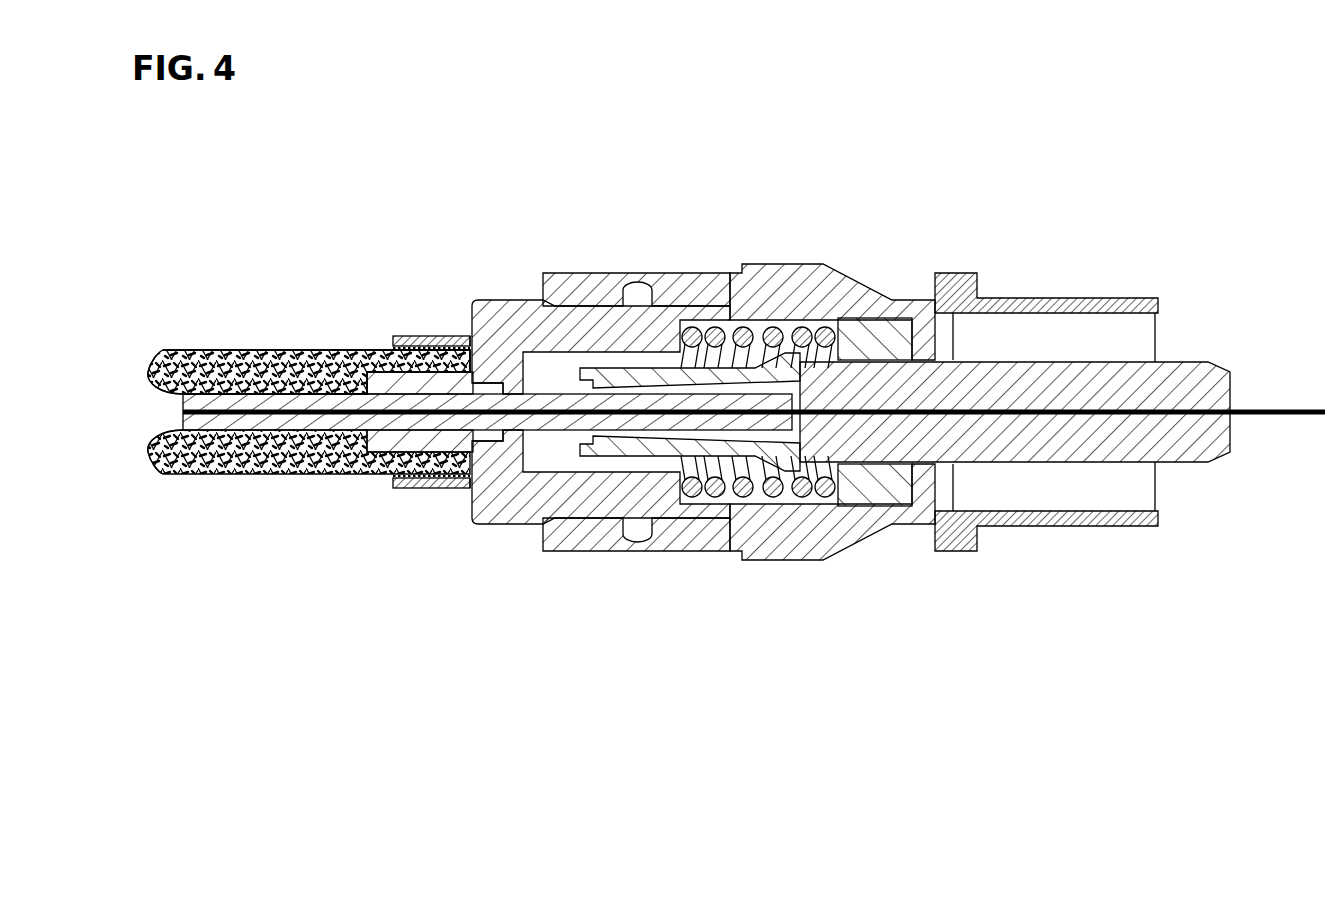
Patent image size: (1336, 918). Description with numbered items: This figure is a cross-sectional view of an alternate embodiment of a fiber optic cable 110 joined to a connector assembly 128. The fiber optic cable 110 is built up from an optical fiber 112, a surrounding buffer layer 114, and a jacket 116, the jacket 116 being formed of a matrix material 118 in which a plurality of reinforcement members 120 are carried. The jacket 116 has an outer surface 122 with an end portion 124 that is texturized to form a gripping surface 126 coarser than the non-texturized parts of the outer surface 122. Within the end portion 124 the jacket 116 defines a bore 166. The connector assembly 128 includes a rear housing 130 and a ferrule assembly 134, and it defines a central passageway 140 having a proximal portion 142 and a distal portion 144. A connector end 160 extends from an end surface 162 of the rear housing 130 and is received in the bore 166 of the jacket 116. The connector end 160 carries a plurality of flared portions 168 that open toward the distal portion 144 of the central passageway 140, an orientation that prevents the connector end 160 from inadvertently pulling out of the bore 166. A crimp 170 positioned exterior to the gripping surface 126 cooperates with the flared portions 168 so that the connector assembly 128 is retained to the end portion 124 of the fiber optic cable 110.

The fiber optic cable 110 is at (697, 405).
The optical fiber 112 is at (205, 415).
The buffer layer 114 is at (533, 423).
The jacket 116 is at (339, 341).
The matrix material 118 is at (157, 373).
The reinforcement members 120 is at (270, 350).
The outer surface 122 is at (208, 349).
The end portion 124 is at (425, 492).
The gripping surface 126 is at (453, 490).
The connector assembly 128 is at (870, 238).
The rear housing 130 is at (490, 523).
The ferrule assembly 134 is at (981, 355).
The central passageway 140 is at (584, 465).
The proximal portion 142 is at (493, 386).
The distal portion 144 is at (1145, 338).
The connector end 160 is at (373, 371).
The end surface 162 is at (472, 302).
The bore 166 is at (357, 440).
The flared portions 168 is at (389, 456).
The crimp 170 is at (421, 336).